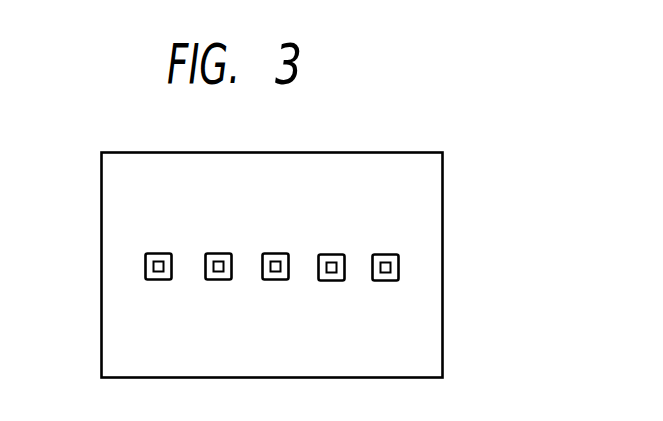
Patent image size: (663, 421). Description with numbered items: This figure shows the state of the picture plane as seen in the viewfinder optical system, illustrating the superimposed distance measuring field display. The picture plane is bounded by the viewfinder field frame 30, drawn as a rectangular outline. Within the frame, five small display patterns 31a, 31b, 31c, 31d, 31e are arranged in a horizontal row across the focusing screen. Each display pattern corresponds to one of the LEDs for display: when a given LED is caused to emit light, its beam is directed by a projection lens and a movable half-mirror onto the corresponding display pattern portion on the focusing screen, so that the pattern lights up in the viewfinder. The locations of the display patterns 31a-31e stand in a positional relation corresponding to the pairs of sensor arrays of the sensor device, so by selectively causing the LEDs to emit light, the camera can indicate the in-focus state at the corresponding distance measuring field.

The viewfinder field frame 30 is at (443, 284).
The display pattern 31a is at (158, 253).
The display pattern 31b is at (218, 253).
The display pattern 31c is at (275, 253).
The display pattern 31d is at (332, 254).
The display pattern 31e is at (386, 254).